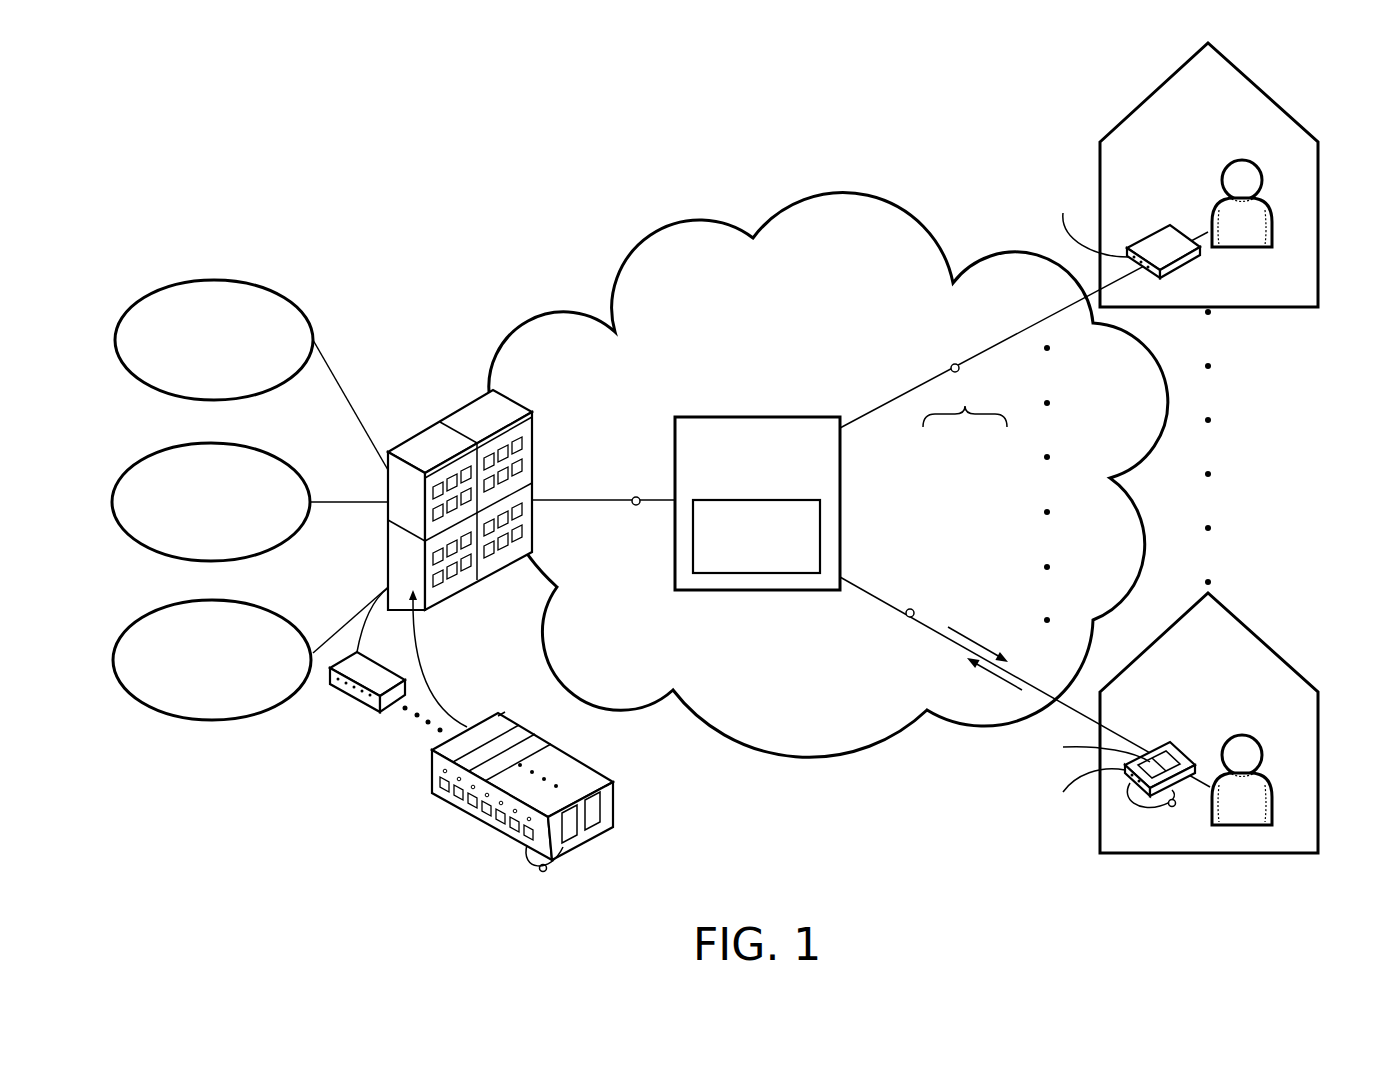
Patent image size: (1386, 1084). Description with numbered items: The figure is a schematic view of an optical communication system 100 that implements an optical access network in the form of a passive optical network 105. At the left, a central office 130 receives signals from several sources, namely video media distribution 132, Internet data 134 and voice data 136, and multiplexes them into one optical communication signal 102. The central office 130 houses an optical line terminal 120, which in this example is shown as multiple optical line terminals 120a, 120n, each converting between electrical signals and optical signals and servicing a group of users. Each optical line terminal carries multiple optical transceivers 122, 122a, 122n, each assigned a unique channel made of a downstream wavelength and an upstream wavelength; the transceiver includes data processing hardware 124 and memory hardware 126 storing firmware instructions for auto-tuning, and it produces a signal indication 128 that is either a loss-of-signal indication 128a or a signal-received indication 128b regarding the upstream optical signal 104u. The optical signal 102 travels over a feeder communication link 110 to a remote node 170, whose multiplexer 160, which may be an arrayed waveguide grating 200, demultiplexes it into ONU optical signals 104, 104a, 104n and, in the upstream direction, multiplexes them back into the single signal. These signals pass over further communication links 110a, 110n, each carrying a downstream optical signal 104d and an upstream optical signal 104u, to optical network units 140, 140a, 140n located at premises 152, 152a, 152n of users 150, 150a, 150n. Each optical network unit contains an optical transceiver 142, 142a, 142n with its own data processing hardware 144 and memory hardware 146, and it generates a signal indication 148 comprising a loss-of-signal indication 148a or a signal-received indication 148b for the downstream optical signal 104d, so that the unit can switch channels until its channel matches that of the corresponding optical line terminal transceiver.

The communication system 100 is at (829, 114).
The communication signal 102 is at (636, 496).
The ONU optical signal 104 is at (941, 508).
The ONU optical signal 104a is at (955, 364).
The ONU optical signal 104n is at (910, 617).
The downstream optical signal 104d is at (988, 642).
The upstream optical signal 104u is at (991, 682).
The passive optical network 105 is at (873, 272).
The communication link 110 is at (575, 498).
The communication link 110a is at (888, 402).
The communication link 110n is at (910, 609).
The optical line terminal 120 is at (455, 731).
The optical line terminal 120a is at (352, 700).
The optical line terminal 120n is at (487, 827).
The optical transceiver 122 is at (603, 749).
The optical transceiver 122a is at (505, 712).
The optical transceiver 122n is at (600, 782).
The data processing hardware 124 is at (570, 843).
The memory hardware 126 is at (598, 830).
The signal indication 128 is at (520, 903).
The loss-of-signal indication 128a is at (540, 872).
The signal-received indication 128b is at (513, 914).
The central office 130 is at (506, 396).
The video media distribution 132 is at (183, 282).
The Internet data 134 is at (183, 444).
The voice data 136 is at (186, 602).
The optical network unit 140 is at (1169, 499).
The optical network unit 140a is at (1146, 230).
The optical network unit 140n is at (1152, 745).
The optical transceiver 142 is at (1074, 505).
The optical transceiver 142a is at (1082, 209).
The optical transceiver 142n is at (1072, 808).
The data processing hardware 144 is at (1087, 750).
The memory hardware 146 is at (1170, 745).
The signal indication 148 is at (1175, 863).
The loss-of-signal indication 148a is at (1175, 808).
The signal-received indication 148b is at (1195, 872).
The user 150 is at (1241, 472).
The user 150a is at (1237, 160).
The user 150n is at (1234, 736).
The premises 152 is at (1228, 448).
The premises 152a is at (1288, 114).
The premises 152n is at (1288, 664).
The multiplexer 160 is at (756, 570).
The remote node 170 is at (752, 417).
The arrayed waveguide grating 200 is at (760, 590).